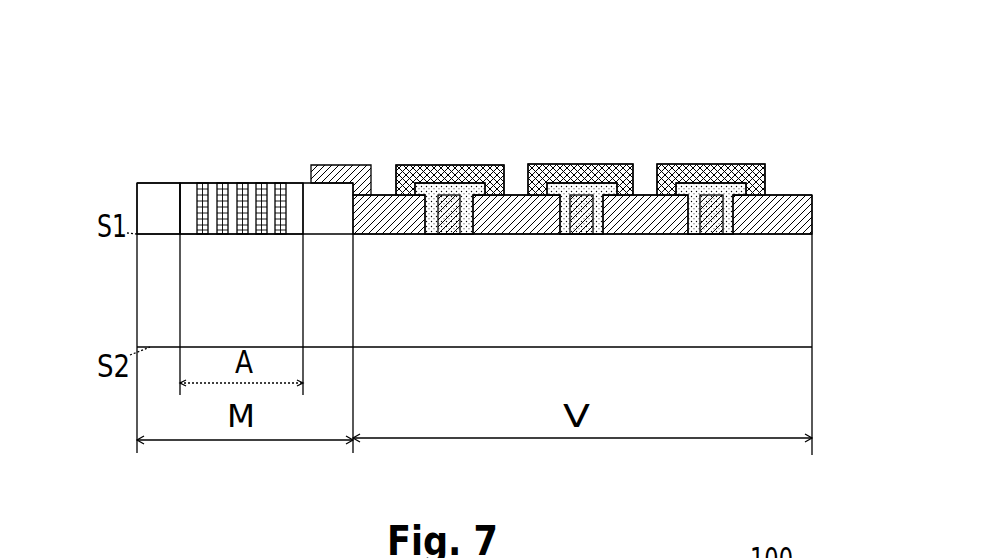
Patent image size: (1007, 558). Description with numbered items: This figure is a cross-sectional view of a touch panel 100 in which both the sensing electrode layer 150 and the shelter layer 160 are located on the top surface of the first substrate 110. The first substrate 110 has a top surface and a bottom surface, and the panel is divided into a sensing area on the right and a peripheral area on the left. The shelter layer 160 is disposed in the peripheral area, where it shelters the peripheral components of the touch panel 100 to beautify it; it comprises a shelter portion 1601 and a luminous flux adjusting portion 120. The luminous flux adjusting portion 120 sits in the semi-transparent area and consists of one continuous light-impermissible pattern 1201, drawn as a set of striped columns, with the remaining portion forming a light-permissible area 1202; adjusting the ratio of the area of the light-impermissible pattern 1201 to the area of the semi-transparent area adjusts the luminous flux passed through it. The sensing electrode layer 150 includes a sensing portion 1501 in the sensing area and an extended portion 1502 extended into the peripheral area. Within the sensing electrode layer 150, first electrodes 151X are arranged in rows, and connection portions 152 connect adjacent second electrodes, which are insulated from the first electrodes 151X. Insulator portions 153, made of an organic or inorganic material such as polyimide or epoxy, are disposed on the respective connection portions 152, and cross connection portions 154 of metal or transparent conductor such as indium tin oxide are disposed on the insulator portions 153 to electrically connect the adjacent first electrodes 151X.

The touch panel 100 is at (432, 227).
The first substrate 110 is at (137, 293).
The luminous flux adjusting portion 120 is at (228, 168).
The light-impermissible pattern 1201 is at (280, 217).
The light-permissible area 1202 is at (188, 223).
The sensing electrode layer 150 is at (573, 243).
The sensing portion 1501 is at (514, 190).
The extended portion 1502 is at (343, 167).
The first electrodes 151X is at (640, 190).
The connection portions 152 is at (712, 236).
The insulator portions 153 is at (740, 167).
The cross connection portions 154 is at (713, 183).
The shelter layer 160 is at (194, 143).
The shelter portion 1601 is at (150, 207).